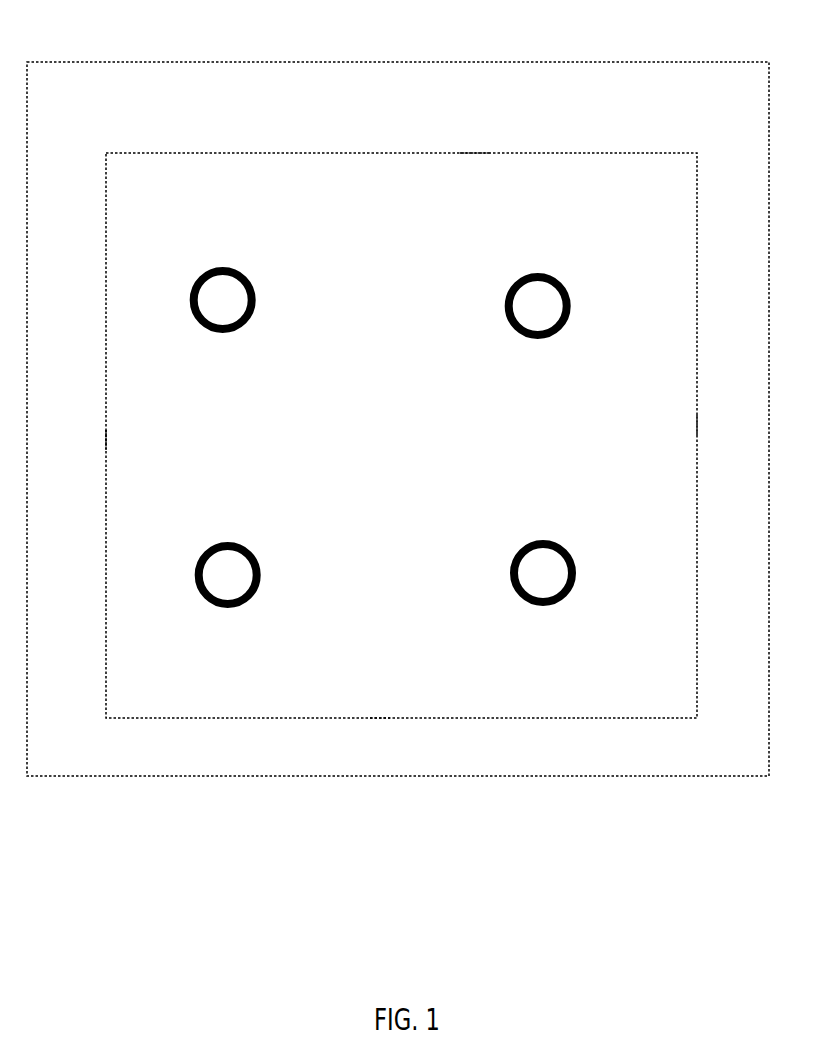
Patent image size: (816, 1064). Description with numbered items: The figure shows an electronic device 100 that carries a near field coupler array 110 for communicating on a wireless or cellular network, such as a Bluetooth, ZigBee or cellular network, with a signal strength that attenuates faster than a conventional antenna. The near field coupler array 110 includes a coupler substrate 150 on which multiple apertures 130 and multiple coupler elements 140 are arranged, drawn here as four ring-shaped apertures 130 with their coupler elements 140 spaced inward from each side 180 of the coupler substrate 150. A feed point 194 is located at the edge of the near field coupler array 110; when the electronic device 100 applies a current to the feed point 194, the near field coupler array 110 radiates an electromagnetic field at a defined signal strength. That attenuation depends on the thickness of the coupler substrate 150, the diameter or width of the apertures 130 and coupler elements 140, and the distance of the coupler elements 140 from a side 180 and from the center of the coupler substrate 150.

The electronic device 100 is at (422, 38).
The near field coupler array 110 is at (438, 756).
The apertures 130 is at (238, 301).
The coupler elements 140 is at (223, 267).
The coupler substrate 150 is at (403, 153).
The side 180 is at (477, 165).
The feed point 194 is at (107, 440).